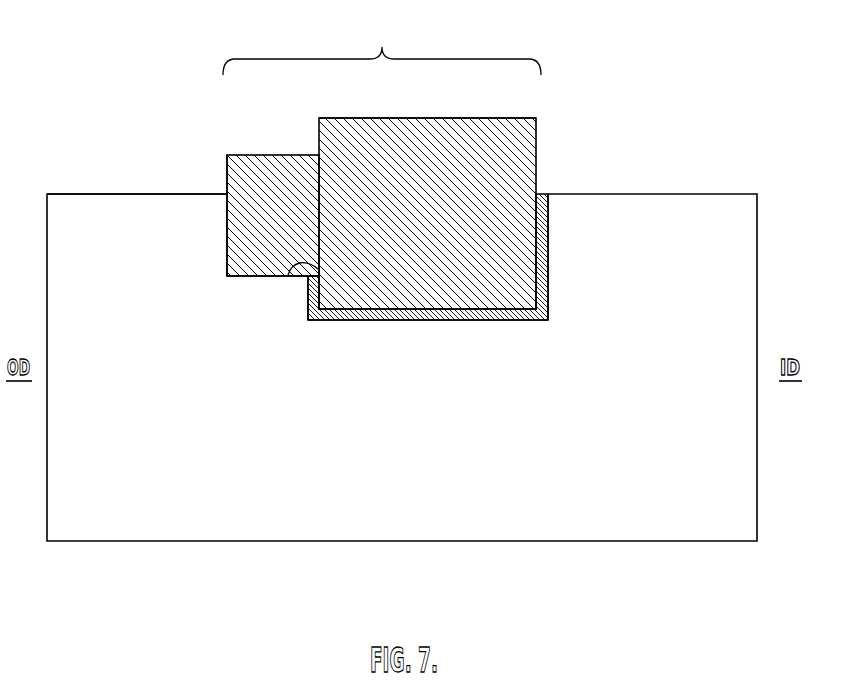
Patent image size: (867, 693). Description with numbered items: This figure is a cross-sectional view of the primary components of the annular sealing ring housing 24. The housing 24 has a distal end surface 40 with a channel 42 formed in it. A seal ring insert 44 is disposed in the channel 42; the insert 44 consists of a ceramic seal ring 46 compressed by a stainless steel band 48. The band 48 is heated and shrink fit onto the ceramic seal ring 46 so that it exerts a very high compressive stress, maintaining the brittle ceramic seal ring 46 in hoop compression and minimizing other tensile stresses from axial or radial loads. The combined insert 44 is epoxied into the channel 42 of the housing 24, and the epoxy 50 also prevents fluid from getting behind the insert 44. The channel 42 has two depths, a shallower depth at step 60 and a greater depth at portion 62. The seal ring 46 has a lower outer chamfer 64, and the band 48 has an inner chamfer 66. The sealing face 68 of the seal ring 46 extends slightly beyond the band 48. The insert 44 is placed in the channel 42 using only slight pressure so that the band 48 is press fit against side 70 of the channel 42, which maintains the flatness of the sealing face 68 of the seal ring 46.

The sealing ring housing 24 is at (108, 213).
The distal end surface 40 is at (677, 190).
The channel 42 is at (418, 326).
The seal ring insert 44 is at (382, 47).
The ceramic seal ring 46 is at (512, 142).
The stainless steel band 48 is at (283, 154).
The epoxy 50 is at (540, 192).
The step 60 is at (268, 277).
The portion 62 is at (465, 320).
The lower outer chamfer 64 is at (318, 270).
The inner chamfer 66 is at (292, 278).
The sealing face 68 is at (395, 118).
The side of channel 70 is at (227, 245).